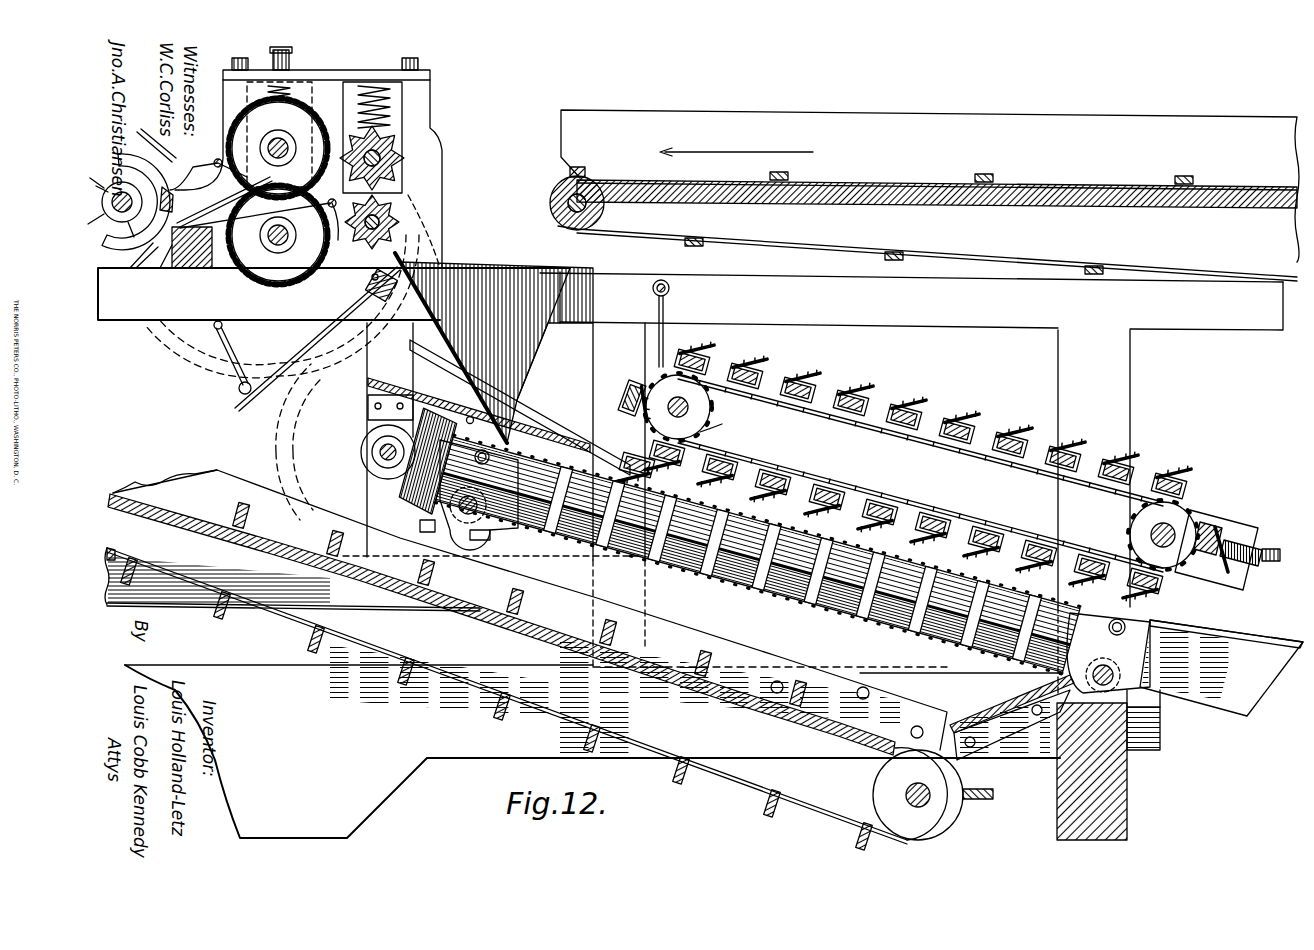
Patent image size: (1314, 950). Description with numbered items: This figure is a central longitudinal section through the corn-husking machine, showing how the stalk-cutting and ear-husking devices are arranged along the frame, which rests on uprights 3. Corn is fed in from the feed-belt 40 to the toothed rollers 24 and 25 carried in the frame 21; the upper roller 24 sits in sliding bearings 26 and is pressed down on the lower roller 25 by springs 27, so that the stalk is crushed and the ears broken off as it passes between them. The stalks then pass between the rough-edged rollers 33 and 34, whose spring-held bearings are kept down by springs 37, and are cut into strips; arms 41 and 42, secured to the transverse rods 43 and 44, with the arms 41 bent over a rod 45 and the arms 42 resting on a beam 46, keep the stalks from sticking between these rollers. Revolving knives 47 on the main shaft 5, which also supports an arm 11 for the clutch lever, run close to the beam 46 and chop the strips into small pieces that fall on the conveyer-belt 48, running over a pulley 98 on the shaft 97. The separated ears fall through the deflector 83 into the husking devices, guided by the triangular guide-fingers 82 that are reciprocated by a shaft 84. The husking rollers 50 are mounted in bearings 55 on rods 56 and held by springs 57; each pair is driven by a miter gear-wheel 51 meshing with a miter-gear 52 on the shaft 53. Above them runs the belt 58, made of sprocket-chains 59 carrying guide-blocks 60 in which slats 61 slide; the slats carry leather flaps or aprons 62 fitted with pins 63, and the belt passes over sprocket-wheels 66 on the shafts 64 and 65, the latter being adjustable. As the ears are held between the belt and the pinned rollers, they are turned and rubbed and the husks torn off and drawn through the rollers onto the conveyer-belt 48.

The uprights 3 is at (861, 488).
The shaft 5 is at (112, 208).
The arm 11 is at (868, 608).
The frame 21 is at (442, 150).
The roller 24 is at (400, 142).
The roller 25 is at (400, 216).
The sliding bearings 26 is at (412, 170).
The springs 27 is at (382, 104).
The rollers 33 is at (302, 265).
The rollers 34 is at (312, 127).
The springs 37 is at (285, 88).
The feed-belt 40 is at (878, 180).
The arms 41 is at (250, 172).
The arms 42 is at (185, 268).
The rod 43 is at (214, 163).
The rod 44 is at (340, 240).
The rod 45 is at (330, 168).
The beam 46 is at (185, 268).
The revolving knives 47 is at (145, 258).
The conveyer-belt 48 is at (205, 520).
The rollers 50 is at (790, 585).
The miter gear-wheel 51 is at (415, 490).
The miter-gear 52 is at (362, 448).
The shaft 53 is at (385, 447).
The bearings 55 is at (418, 470).
The rods 56 is at (482, 513).
The springs 57 is at (490, 455).
The belt 58 is at (920, 505).
The sprocket-chains 59 is at (850, 420).
The guide-blocks 60 is at (710, 352).
The slats 61 is at (880, 395).
The flaps or aprons 62 is at (985, 420).
The pins 63 is at (790, 385).
The shaft 64 is at (690, 407).
The shaft 65 is at (1170, 535).
The sprocket-wheels 66 is at (700, 432).
The guide-fingers 82 is at (540, 424).
The deflector 83 is at (430, 300).
The shaft 84 is at (478, 418).
The shaft 97 is at (932, 800).
The pulley 98 is at (933, 794).